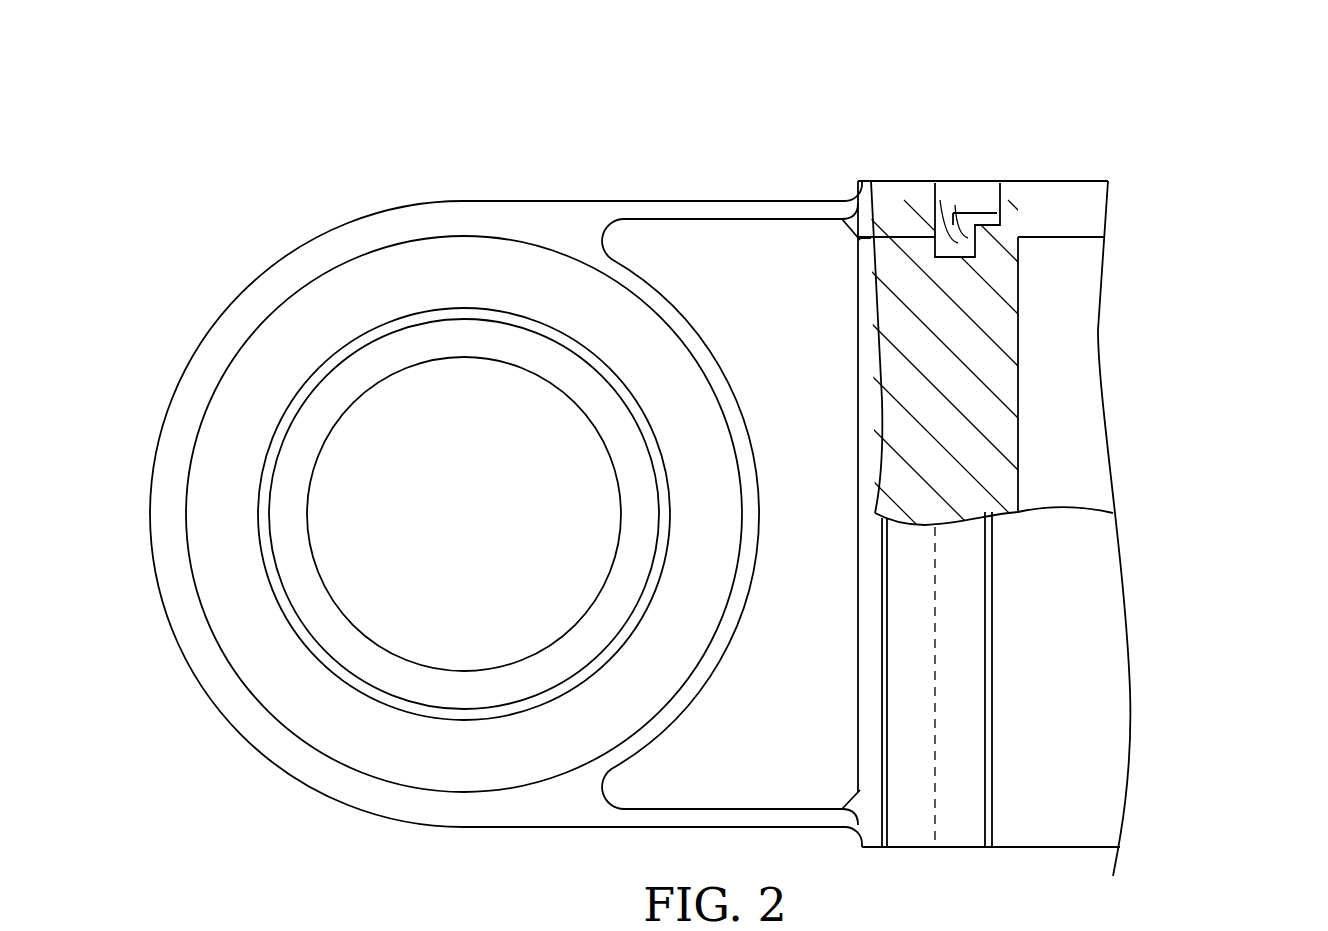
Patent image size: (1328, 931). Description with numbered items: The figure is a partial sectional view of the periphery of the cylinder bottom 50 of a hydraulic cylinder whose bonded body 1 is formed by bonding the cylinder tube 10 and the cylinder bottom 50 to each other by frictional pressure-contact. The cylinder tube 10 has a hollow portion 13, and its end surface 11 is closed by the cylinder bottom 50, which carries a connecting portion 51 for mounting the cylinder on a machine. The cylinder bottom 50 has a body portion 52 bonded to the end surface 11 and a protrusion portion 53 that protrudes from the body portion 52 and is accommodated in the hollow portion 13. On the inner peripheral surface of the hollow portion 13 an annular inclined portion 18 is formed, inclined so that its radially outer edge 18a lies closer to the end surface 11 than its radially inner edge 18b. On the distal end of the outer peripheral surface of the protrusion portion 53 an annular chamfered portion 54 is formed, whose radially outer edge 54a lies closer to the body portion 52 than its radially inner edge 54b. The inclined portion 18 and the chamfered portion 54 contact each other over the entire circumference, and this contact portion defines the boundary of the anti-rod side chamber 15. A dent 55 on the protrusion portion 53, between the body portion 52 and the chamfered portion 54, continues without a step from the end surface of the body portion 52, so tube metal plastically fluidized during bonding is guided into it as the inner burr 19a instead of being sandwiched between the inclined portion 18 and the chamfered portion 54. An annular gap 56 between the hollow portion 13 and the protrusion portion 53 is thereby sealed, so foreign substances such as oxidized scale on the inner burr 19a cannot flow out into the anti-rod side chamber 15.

The bonded body 1 is at (350, 156).
The cylinder tube 10 is at (1098, 178).
The end surface 11 is at (935, 200).
The hollow portion 13 is at (1092, 240).
The anti-rod side chamber 15 is at (1075, 432).
The inclined portion 18 is at (963, 213).
The edge on outer side in radial direction of inclined portion 18a is at (990, 212).
The edge on inner side in radial direction of inclined portion 18b is at (1002, 205).
The inner burr 19a is at (940, 220).
The cylinder bottom 50 is at (545, 202).
The connecting portion 51 is at (440, 765).
The body portion 52 is at (858, 181).
The protrusion portion 53 is at (995, 373).
The chamfered portion 54 is at (1008, 232).
The edge on outer side in radial direction of chamfered portion 54a is at (1003, 233).
The edge on inner side in radial direction of chamfered portion 54b is at (1020, 240).
The dent 55 is at (852, 240).
The gap 56 is at (972, 212).